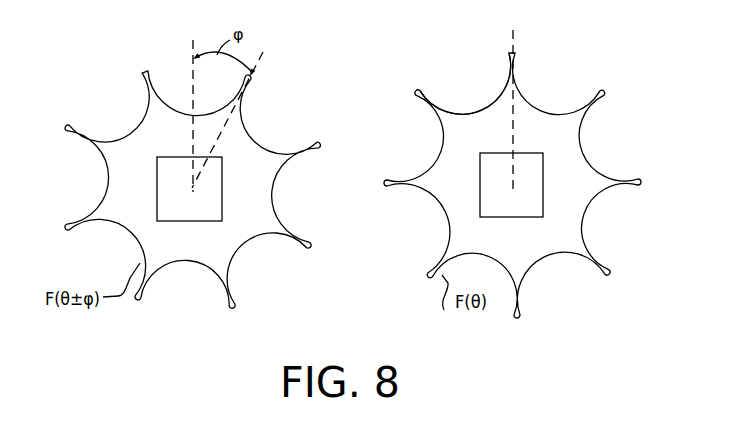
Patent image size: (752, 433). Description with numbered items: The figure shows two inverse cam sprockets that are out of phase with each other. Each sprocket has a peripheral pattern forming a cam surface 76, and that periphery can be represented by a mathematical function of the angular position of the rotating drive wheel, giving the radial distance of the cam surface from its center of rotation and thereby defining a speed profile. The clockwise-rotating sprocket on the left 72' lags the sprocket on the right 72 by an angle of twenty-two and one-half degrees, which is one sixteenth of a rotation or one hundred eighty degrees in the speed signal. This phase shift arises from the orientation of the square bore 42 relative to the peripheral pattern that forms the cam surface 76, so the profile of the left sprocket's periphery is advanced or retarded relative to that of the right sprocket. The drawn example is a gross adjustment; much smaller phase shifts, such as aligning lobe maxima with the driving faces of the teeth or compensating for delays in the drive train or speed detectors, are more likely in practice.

The sprocket 72 is at (512, 185).
The clockwise-rotating sprocket 72' is at (183, 189).
The cam surface 76 is at (442, 128).
The square bore 42 is at (535, 210).